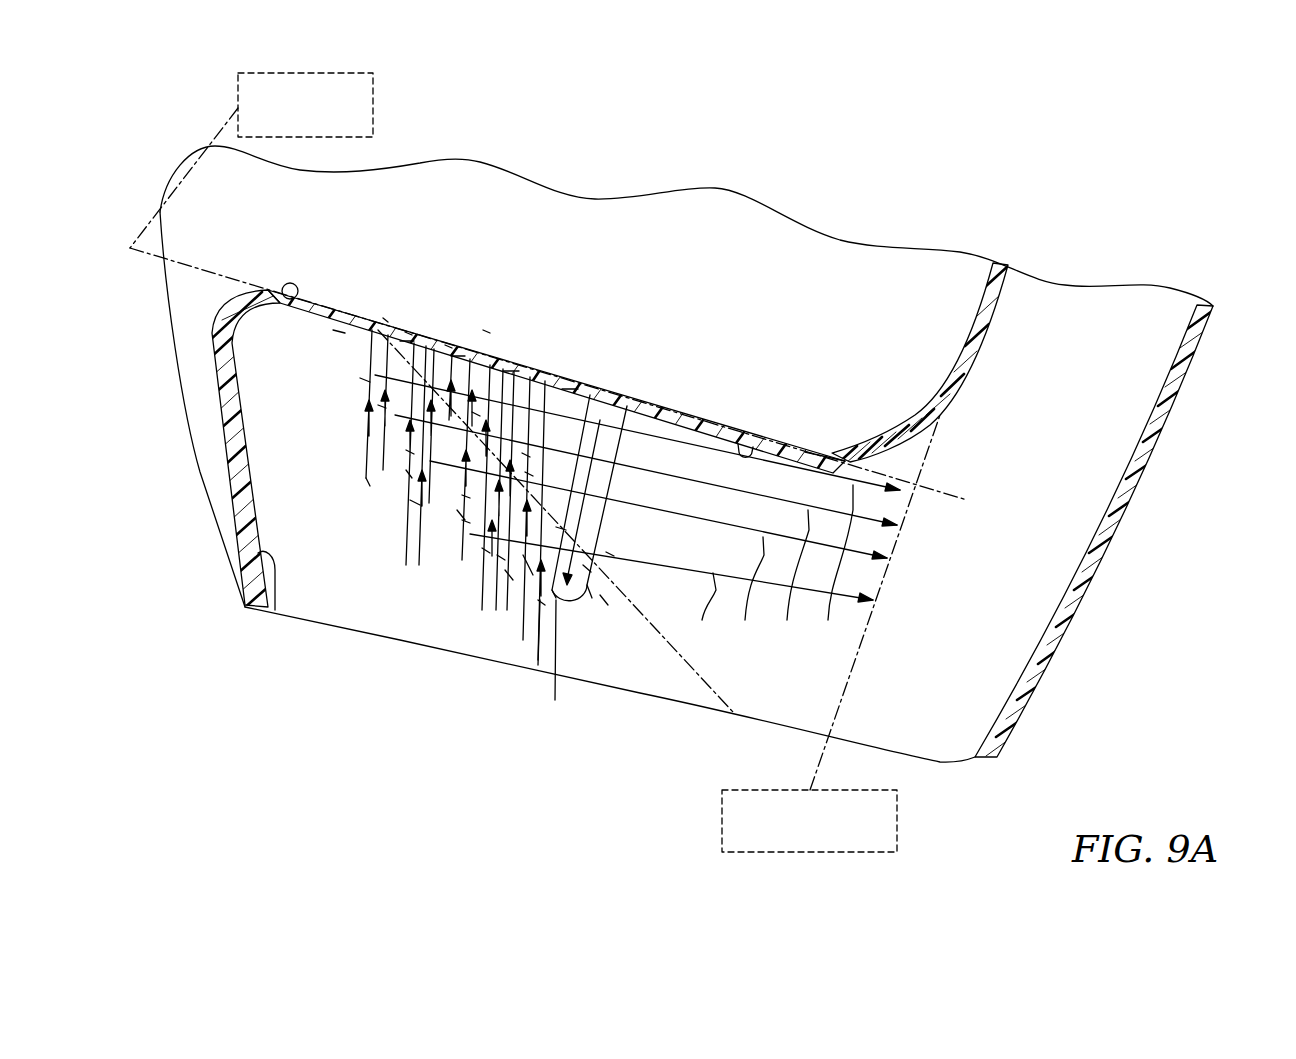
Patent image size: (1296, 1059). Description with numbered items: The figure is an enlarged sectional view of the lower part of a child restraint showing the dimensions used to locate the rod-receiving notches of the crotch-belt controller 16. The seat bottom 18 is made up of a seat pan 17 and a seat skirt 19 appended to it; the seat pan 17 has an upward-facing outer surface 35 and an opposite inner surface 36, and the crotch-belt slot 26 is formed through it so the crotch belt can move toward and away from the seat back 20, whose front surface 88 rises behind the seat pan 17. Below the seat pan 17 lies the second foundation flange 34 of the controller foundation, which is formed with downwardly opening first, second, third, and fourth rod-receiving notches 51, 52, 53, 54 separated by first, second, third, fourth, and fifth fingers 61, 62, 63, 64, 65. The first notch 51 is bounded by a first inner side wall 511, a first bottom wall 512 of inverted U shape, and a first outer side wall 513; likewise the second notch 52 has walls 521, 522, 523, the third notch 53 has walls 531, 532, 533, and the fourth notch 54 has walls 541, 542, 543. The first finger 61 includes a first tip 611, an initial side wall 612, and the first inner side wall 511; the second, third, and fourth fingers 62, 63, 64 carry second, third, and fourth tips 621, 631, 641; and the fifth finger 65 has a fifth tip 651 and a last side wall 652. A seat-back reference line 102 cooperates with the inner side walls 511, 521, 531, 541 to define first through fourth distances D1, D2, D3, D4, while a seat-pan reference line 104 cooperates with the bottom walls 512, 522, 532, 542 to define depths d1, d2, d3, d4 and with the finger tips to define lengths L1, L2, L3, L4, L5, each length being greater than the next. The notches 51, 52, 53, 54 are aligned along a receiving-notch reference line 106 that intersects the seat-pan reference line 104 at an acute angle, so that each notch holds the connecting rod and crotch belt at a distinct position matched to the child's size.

The crotch-belt controller 16 is at (555, 660).
The seat pan 17 is at (828, 455).
The seat bottom 18 is at (188, 524).
The seat skirt 19 is at (275, 612).
The seat back 20 is at (1215, 388).
The crotch-belt slot 26 is at (627, 390).
The second foundation flange 34 is at (605, 478).
The outer surface 35 is at (291, 300).
The inner surface 36 is at (745, 430).
The first rod-receiving notch 51 is at (539, 667).
The second rod-receiving notch 52 is at (500, 570).
The third rod-receiving notch 53 is at (455, 515).
The fourth rod-receiving notch 54 is at (410, 472).
The first finger 61 is at (606, 605).
The second finger 62 is at (539, 605).
The third finger 63 is at (484, 555).
The fourth finger 64 is at (412, 505).
The fifth finger 65 is at (352, 388).
The front surface 88 is at (1000, 300).
The seat-back reference line 102 is at (788, 790).
The seat-pan reference line 104 is at (303, 73).
The receiving-notch reference line 106 is at (710, 700).
The first inner side wall 511 is at (553, 600).
The first bottom wall 512 is at (528, 474).
The first outer side wall 513 is at (560, 528).
The second inner side wall 521 is at (507, 585).
The second bottom wall 522 is at (474, 413).
The second outer side wall 523 is at (524, 455).
The third inner side wall 531 is at (460, 520).
The third bottom wall 532 is at (484, 330).
The third outer side wall 533 is at (446, 345).
The fourth inner side wall 541 is at (406, 332).
The fourth bottom wall 542 is at (385, 318).
The fourth outer side wall 543 is at (362, 379).
The first tip 611 is at (590, 605).
The initial side wall 612 is at (610, 553).
The second tip 621 is at (523, 590).
The third tip 631 is at (464, 523).
The fourth tip 641 is at (408, 495).
The fifth tip 651 is at (370, 455).
The last side wall 652 is at (335, 333).
The first length L1 is at (600, 570).
The second length L2 is at (498, 558).
The third length L3 is at (462, 497).
The fourth length L4 is at (408, 458).
The fifth length L5 is at (378, 415).
The first depth d1 is at (572, 385).
The second depth d2 is at (512, 367).
The third depth d3 is at (459, 352).
The fourth depth d4 is at (407, 338).
The first distance D1 is at (703, 608).
The second distance D2 is at (747, 590).
The third distance D3 is at (791, 577).
The fourth distance D4 is at (833, 564).